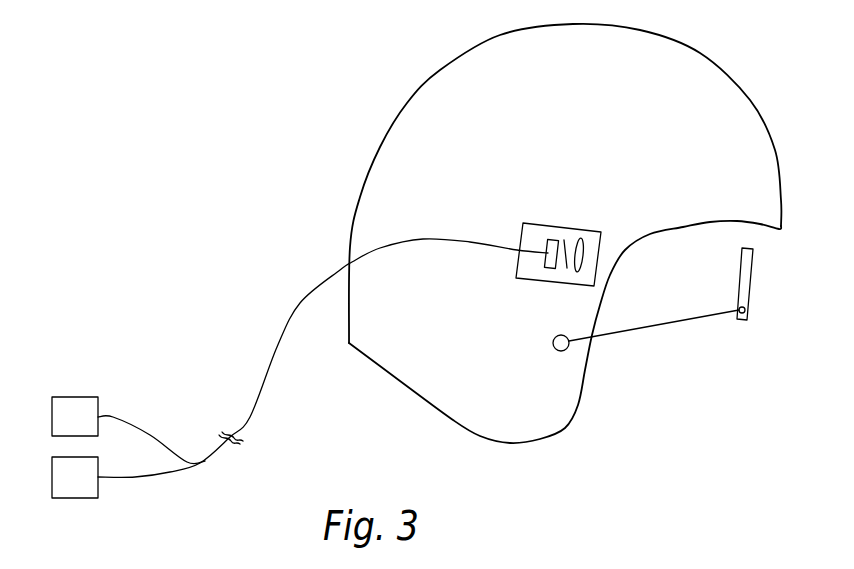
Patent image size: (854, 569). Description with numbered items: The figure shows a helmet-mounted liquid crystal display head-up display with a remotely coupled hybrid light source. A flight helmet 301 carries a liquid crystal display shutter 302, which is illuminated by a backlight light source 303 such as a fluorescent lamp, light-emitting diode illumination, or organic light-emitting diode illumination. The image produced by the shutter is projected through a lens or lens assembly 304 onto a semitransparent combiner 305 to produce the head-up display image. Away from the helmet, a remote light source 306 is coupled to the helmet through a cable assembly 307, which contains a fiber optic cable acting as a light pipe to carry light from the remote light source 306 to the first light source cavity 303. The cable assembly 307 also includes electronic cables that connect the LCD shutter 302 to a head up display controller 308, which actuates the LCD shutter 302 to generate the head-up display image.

The flight helmet 301 is at (412, 104).
The liquid crystal display shutter 302 is at (567, 270).
The backlight light source 303 is at (555, 236).
The lens assembly 304 is at (583, 238).
The semitransparent combiner 305 is at (756, 263).
The remote light source 306 is at (76, 491).
The cable assembly 307 is at (279, 347).
The head up display controller 308 is at (76, 405).